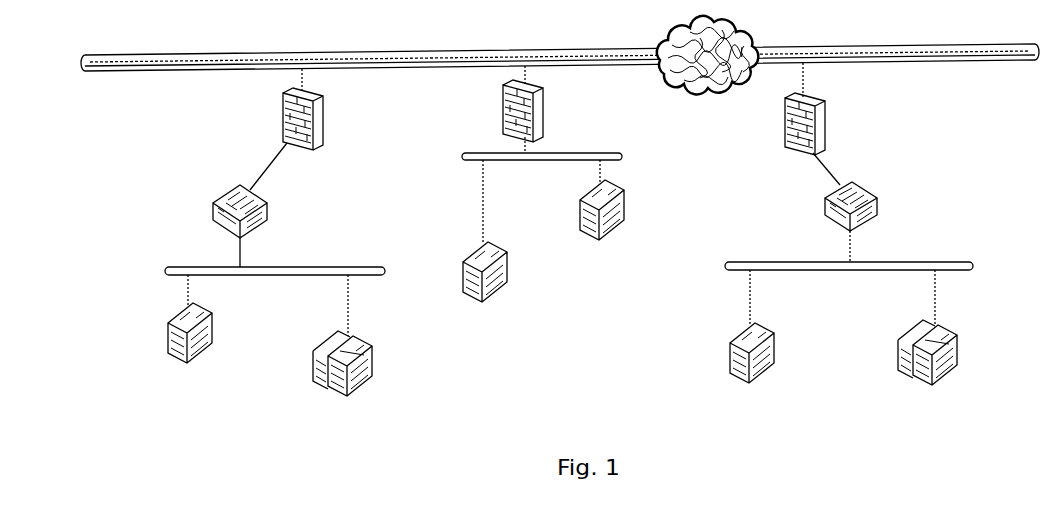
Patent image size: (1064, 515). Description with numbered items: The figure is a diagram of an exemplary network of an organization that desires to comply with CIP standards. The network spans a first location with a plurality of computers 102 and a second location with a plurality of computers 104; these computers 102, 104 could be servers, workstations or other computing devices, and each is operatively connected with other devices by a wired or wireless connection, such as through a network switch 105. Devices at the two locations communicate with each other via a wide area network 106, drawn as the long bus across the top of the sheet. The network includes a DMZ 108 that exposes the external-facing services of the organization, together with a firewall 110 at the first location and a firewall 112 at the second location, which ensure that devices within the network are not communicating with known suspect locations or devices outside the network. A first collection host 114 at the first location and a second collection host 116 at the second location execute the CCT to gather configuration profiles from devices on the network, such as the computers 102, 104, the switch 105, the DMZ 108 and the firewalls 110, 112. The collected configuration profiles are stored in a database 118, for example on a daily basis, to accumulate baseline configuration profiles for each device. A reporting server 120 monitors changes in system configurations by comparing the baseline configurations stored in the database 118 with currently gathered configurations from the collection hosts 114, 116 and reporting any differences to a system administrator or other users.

The computers 102 is at (313, 362).
The computers 104 is at (898, 343).
The network switch 105 is at (223, 197).
The wide area network 106 is at (223, 55).
The DMZ 108 is at (503, 115).
The firewall 110 is at (283, 123).
The firewall 112 is at (785, 130).
The first collection host 114 is at (168, 348).
The second collection host 116 is at (730, 352).
The database 118 is at (463, 266).
The reporting server 120 is at (580, 218).